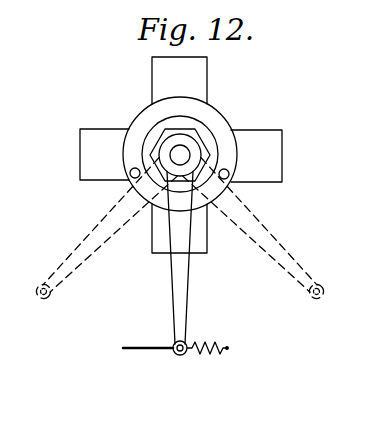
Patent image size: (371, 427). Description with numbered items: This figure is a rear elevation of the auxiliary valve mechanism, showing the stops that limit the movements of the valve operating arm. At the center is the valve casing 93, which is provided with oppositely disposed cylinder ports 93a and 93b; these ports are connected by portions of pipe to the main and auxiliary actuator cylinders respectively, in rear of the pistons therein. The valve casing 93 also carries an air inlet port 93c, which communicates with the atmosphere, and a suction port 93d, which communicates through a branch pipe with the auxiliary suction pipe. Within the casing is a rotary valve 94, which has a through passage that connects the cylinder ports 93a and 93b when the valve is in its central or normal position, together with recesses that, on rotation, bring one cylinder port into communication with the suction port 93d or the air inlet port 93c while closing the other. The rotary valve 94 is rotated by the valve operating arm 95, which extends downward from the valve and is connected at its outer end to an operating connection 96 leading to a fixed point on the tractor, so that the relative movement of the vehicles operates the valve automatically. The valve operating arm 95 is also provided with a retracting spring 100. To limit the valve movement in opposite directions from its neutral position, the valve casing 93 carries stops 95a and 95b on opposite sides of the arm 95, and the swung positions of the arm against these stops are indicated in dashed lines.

The valve casing 93 is at (142, 114).
The cylinder port 93a is at (95, 138).
The cylinder port 93b is at (264, 137).
The air inlet port 93c is at (163, 248).
The suction port 93d is at (207, 72).
The rotary valve 94 is at (208, 135).
The valve operating arm 95 is at (183, 297).
The stop 95a is at (131, 177).
The stop 95b is at (229, 178).
The operating connection 96 is at (147, 347).
The retracting spring 100 is at (207, 360).